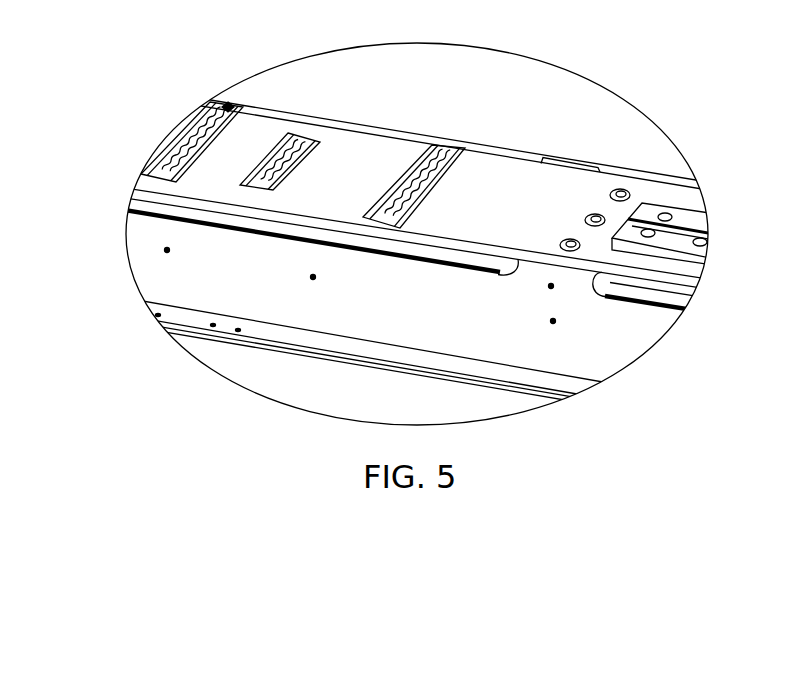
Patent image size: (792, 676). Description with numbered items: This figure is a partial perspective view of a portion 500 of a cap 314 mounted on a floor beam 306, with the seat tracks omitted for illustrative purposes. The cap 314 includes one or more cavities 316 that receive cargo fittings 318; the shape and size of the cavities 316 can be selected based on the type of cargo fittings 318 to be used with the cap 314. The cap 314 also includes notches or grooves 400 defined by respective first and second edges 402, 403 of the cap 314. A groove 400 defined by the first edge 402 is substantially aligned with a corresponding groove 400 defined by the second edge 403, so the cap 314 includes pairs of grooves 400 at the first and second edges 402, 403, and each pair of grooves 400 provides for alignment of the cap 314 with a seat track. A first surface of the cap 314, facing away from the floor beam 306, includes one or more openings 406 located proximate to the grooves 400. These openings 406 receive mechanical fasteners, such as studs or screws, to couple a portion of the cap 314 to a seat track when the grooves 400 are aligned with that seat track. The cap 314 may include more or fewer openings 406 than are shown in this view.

The portion 500 is at (207, 70).
The cap 314 is at (446, 104).
The cavities 316 is at (230, 105).
The cargo fittings 318 is at (320, 142).
The grooves 400 is at (674, 175).
The first edge 402 is at (472, 270).
The second edge 403 is at (547, 160).
The openings 406 is at (591, 202).
The floor beam 306 is at (333, 360).